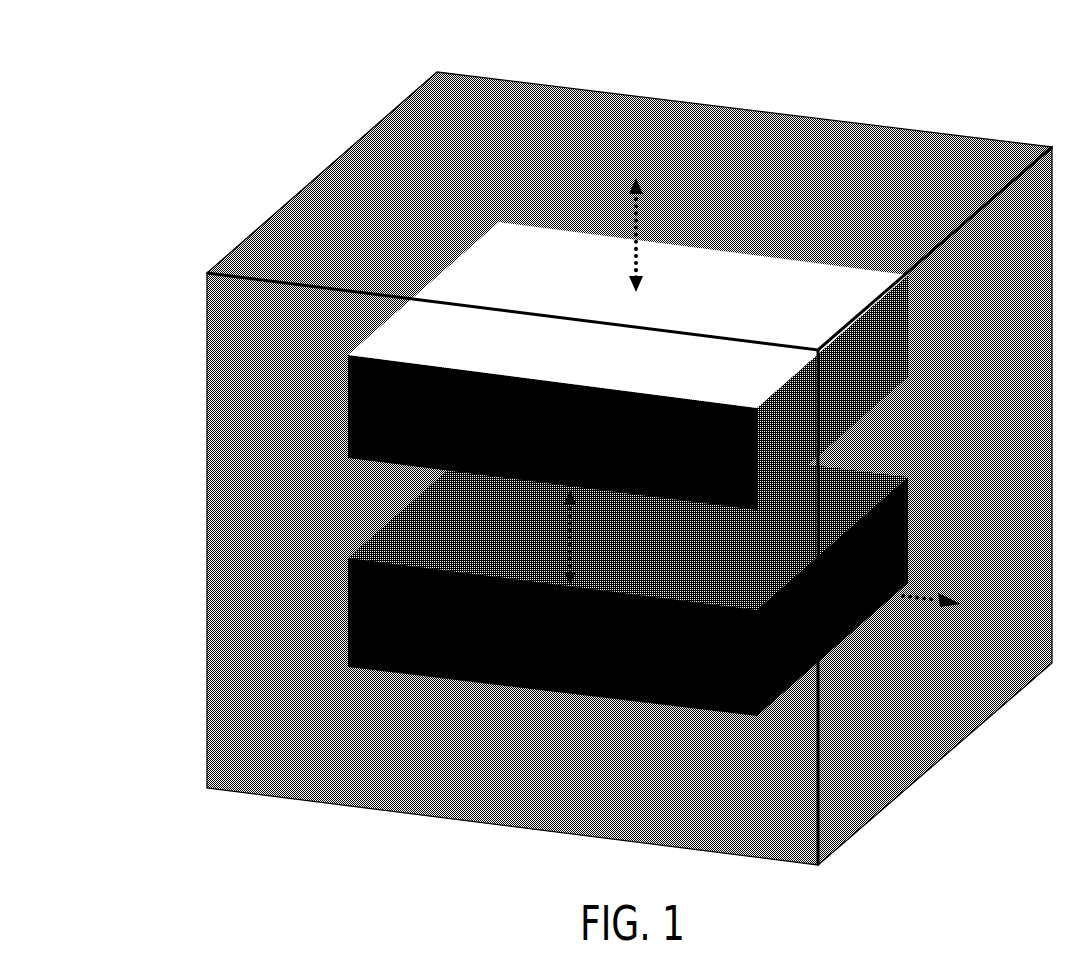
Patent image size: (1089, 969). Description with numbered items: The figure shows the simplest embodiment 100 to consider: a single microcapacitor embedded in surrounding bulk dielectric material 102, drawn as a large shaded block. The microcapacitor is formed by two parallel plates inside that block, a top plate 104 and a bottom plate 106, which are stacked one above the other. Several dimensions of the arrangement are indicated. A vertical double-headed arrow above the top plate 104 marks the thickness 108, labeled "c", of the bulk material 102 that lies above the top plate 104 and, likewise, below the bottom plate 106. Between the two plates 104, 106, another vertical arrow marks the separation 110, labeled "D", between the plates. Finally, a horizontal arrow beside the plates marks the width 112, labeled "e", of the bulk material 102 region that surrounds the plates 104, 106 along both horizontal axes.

The embodiment 100 is at (97, 84).
The bulk dielectric material 102 is at (629, 468).
The top plate 104 is at (447, 275).
The bottom plate 106 is at (372, 558).
The thickness 108 is at (637, 214).
The separation 110 is at (574, 511).
The width 112 is at (930, 598).